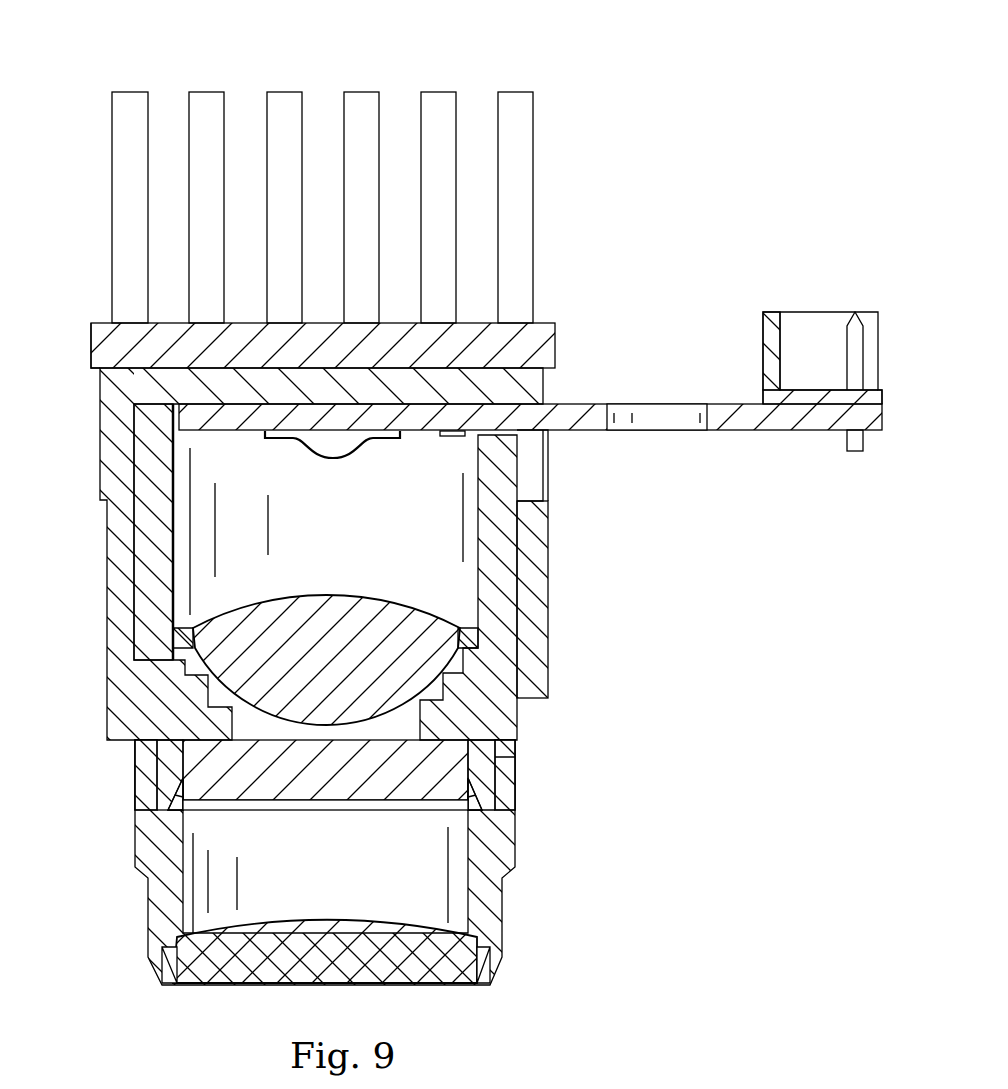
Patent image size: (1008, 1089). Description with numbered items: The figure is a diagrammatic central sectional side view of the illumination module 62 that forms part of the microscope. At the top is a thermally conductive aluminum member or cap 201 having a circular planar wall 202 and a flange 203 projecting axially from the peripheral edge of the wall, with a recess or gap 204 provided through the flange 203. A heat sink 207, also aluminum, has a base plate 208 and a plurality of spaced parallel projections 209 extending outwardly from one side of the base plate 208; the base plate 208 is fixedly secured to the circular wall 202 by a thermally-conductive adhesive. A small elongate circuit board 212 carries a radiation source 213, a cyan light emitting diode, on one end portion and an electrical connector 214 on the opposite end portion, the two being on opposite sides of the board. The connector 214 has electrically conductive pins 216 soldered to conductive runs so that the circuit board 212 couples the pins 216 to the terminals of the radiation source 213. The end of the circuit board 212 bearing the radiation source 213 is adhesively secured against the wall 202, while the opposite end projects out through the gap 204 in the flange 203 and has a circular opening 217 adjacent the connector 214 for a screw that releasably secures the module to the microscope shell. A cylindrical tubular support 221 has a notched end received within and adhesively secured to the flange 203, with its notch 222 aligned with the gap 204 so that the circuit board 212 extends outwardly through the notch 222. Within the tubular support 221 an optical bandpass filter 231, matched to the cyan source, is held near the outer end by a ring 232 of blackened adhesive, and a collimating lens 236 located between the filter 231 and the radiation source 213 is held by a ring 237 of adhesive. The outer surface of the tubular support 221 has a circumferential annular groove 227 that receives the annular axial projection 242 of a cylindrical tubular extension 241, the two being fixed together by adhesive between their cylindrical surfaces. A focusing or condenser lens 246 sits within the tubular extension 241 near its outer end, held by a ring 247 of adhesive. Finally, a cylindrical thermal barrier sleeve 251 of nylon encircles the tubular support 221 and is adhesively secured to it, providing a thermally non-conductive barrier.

The illumination module 62 is at (646, 190).
The member or cap 201 is at (324, 545).
The circular planar wall 202 is at (545, 400).
The flange 203 is at (106, 443).
The recess or gap 204 is at (546, 490).
The heat sink 207 is at (548, 350).
The base plate 208 is at (99, 328).
The projections 209 is at (285, 92).
The circuit board 212 is at (530, 416).
The radiation source 213 is at (335, 455).
The electrical connector 214 is at (825, 382).
The pins 216 is at (857, 452).
The circular opening 217 is at (662, 410).
The tubular support 221 is at (165, 515).
The notch 222 is at (490, 428).
The annular groove 227 is at (520, 757).
The optical filter 231 is at (280, 795).
The ring of adhesive 232 is at (478, 793).
The collimating lens 236 is at (325, 598).
The ring of adhesive 237 is at (465, 630).
The tubular extension 241 is at (140, 843).
The annular axial projection 242 is at (140, 780).
The focusing or condenser lens 246 is at (220, 985).
The ring of adhesive 247 is at (482, 985).
The thermal barrier sleeve 251 is at (546, 635).